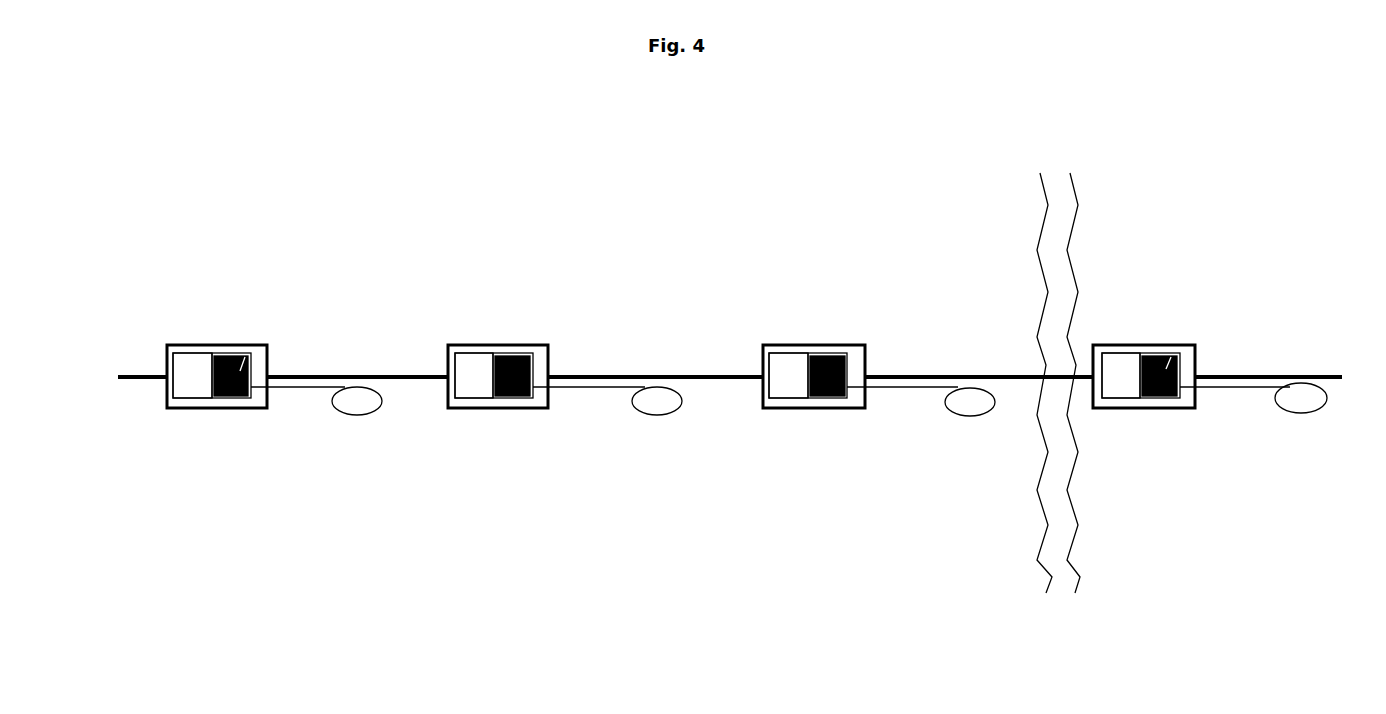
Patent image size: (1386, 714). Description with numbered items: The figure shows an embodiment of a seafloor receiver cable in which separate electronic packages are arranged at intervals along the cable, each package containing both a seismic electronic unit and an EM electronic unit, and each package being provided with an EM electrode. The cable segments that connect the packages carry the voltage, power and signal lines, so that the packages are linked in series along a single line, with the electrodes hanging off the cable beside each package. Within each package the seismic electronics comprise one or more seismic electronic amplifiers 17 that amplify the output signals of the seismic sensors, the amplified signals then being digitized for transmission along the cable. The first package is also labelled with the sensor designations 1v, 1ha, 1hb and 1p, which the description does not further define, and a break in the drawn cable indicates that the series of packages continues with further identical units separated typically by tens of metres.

The seismic electronic amplifier 17 is at (311, 429).
The supply line 1v is at (311, 429).
The first main line 1ha is at (311, 429).
The second main line 1hb is at (311, 429).
The pilot line 1p is at (192, 377).